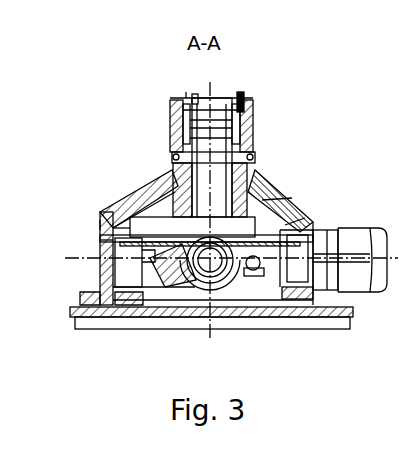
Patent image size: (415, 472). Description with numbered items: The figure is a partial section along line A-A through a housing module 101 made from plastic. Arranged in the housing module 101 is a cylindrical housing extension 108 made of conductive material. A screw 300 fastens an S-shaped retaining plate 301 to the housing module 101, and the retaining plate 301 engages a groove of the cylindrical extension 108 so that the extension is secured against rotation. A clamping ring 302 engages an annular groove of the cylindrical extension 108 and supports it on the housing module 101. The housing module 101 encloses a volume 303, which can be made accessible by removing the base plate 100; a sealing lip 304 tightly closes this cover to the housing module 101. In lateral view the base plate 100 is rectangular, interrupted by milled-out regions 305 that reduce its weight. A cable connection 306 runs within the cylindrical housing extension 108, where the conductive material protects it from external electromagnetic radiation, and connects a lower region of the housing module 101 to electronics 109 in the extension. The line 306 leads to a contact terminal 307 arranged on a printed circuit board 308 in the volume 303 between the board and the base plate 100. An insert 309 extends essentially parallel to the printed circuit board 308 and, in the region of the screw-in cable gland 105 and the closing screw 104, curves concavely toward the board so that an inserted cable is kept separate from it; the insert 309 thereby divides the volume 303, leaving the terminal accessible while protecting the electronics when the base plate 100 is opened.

The base plate 100 is at (68, 323).
The housing module 101 is at (143, 192).
The closing screw 104 is at (50, 202).
The screw-in cable gland 105 is at (357, 280).
The cylindrical housing extension 108 is at (168, 122).
The electronics 109 is at (222, 98).
The screw 300 is at (292, 198).
The S-shaped retaining plate 301 is at (305, 218).
The clamping ring 302 is at (263, 190).
The volume 303 is at (278, 300).
The sealing lip 304 is at (110, 313).
The milled-out regions 305 is at (176, 322).
The cable connection 306 is at (200, 182).
The contact terminal 307 is at (102, 238).
The printed circuit board 308 is at (316, 232).
The insert 309 is at (222, 292).